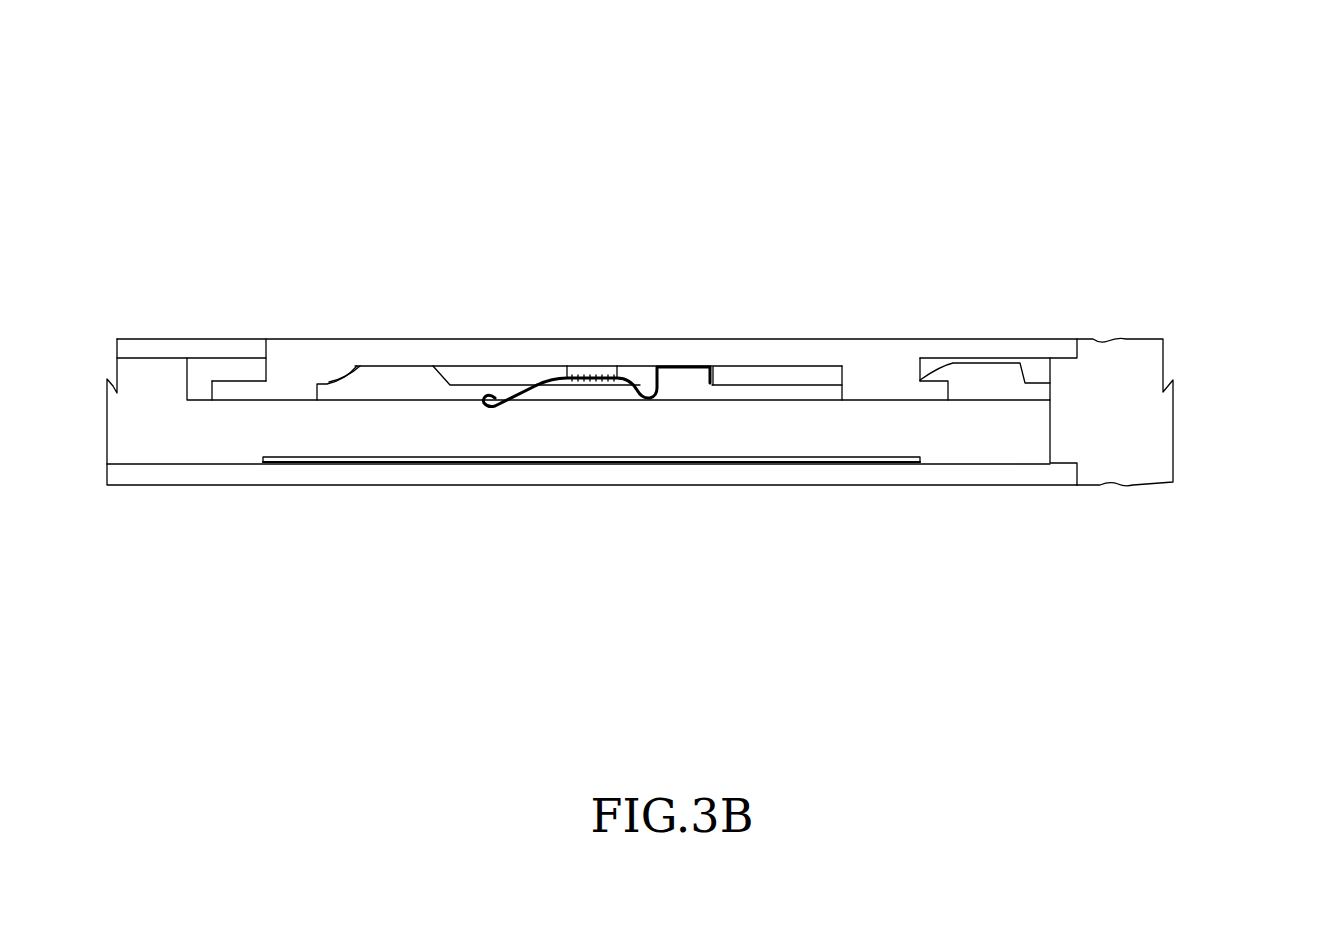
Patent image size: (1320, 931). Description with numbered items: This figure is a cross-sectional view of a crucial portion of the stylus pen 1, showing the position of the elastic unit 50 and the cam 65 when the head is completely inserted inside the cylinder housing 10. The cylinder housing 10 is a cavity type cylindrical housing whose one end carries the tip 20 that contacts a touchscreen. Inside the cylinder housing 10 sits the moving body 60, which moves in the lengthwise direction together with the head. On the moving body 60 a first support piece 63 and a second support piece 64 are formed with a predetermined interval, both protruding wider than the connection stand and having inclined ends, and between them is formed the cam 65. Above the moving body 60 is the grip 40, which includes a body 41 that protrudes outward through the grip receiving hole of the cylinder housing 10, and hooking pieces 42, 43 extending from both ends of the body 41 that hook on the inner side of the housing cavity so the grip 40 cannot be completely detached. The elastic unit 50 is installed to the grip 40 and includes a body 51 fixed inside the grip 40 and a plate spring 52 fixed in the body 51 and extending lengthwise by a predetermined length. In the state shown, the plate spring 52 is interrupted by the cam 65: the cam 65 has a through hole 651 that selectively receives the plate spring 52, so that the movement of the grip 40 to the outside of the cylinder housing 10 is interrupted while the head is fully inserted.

The stylus pen 1 is at (1193, 143).
The cylinder housing 10 is at (975, 338).
The tip 20 is at (1137, 338).
The grip 40 is at (793, 338).
The body 41 is at (448, 345).
The hooking piece 42 is at (236, 383).
The hooking piece 43 is at (937, 393).
The elastic unit 50 is at (700, 367).
The body 51 is at (667, 368).
The plate spring 52 is at (511, 403).
The moving body 60 is at (487, 386).
The first support piece 63 is at (420, 375).
The second support piece 64 is at (1010, 373).
The cam 65 is at (585, 366).
The through hole 651 is at (632, 370).